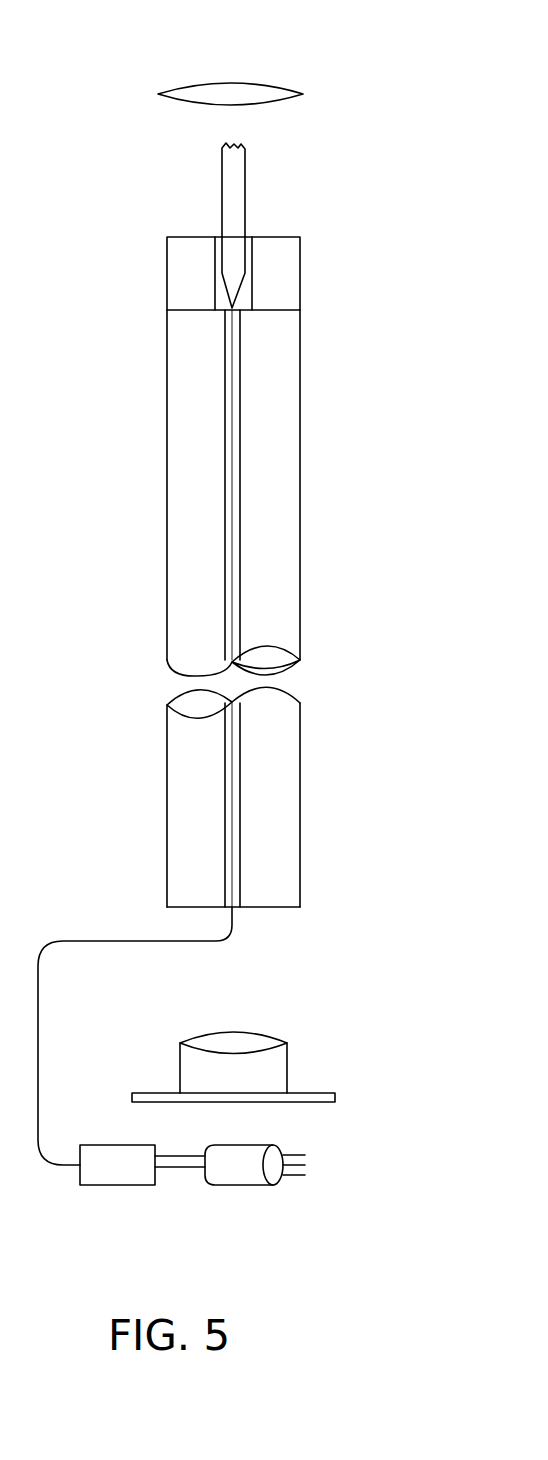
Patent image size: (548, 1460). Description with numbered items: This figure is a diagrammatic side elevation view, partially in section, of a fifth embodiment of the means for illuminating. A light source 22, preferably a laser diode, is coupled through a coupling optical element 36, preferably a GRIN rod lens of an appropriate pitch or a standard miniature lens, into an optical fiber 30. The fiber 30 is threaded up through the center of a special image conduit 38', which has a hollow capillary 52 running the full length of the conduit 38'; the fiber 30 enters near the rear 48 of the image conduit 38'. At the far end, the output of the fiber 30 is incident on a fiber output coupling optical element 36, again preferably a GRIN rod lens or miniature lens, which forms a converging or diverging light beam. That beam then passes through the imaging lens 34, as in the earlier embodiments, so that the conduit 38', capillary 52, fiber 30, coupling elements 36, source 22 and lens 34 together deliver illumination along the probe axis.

The imaging lens 34 is at (234, 96).
The coupling optical element 36 is at (280, 258).
The image conduit 38' is at (279, 608).
The hollow capillary 52 is at (288, 668).
The rear of the image conduit 48 is at (285, 910).
The optical fiber 30 is at (38, 1018).
The light source 22 is at (245, 1178).